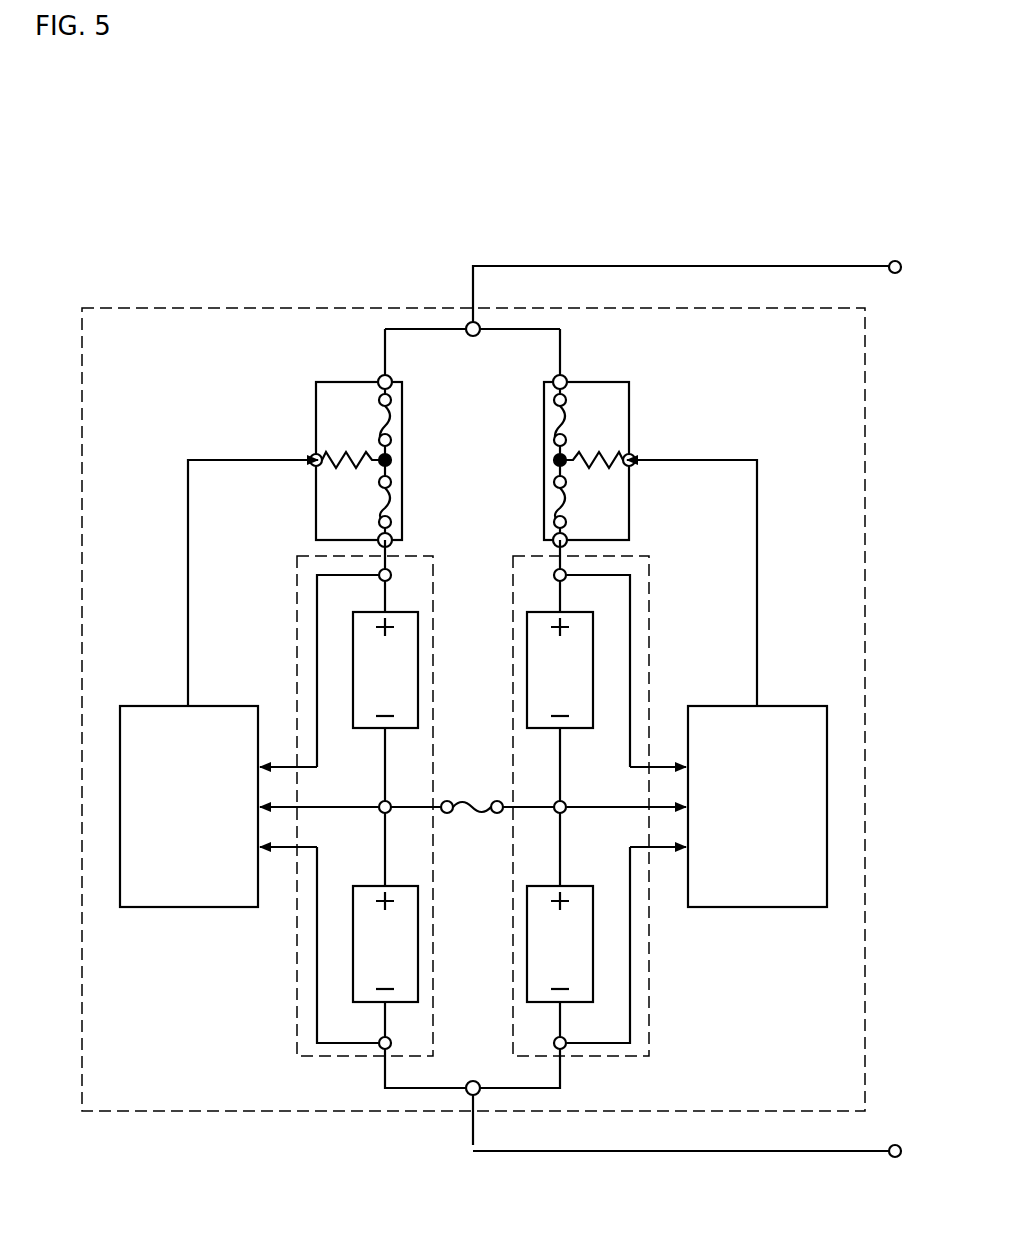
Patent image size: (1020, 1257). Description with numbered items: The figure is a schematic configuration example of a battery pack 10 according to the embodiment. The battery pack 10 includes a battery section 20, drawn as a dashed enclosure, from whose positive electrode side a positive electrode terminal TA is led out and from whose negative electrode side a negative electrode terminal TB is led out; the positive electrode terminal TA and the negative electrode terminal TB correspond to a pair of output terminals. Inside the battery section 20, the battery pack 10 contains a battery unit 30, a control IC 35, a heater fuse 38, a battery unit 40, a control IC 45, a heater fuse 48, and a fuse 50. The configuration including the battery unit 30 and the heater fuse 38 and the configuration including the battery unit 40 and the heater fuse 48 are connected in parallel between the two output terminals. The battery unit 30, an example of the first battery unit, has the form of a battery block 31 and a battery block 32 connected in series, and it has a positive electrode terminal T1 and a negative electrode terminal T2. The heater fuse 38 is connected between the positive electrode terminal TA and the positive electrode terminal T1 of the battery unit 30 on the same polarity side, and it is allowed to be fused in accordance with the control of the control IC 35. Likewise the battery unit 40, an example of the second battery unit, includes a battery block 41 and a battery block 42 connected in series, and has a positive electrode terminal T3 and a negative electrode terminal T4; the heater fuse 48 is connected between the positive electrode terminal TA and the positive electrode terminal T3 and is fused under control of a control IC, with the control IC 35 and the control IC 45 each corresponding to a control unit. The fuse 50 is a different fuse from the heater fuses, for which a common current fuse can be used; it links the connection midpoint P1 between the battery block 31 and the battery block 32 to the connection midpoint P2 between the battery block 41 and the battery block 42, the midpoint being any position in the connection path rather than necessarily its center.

The battery pack 10 is at (567, 145).
The battery section 20 is at (152, 308).
The battery unit 30 is at (297, 571).
The battery unit 40 is at (649, 571).
The battery block 31 is at (370, 728).
The battery block 32 is at (366, 886).
The battery block 41 is at (580, 728).
The battery block 42 is at (582, 886).
The control IC 35 is at (153, 706).
The control IC 45 is at (790, 706).
The heater fuse 38 is at (316, 411).
The heater fuse 48 is at (629, 411).
The fuse 50 is at (458, 800).
The positive electrode terminal T1 is at (379, 580).
The negative electrode terminal T2 is at (379, 1038).
The positive electrode terminal T3 is at (566, 580).
The negative electrode terminal T4 is at (566, 1038).
The connection midpoint P1 is at (392, 801).
The connection midpoint P2 is at (553, 801).
The positive electrode terminal TA is at (895, 261).
The negative electrode terminal TB is at (895, 1145).